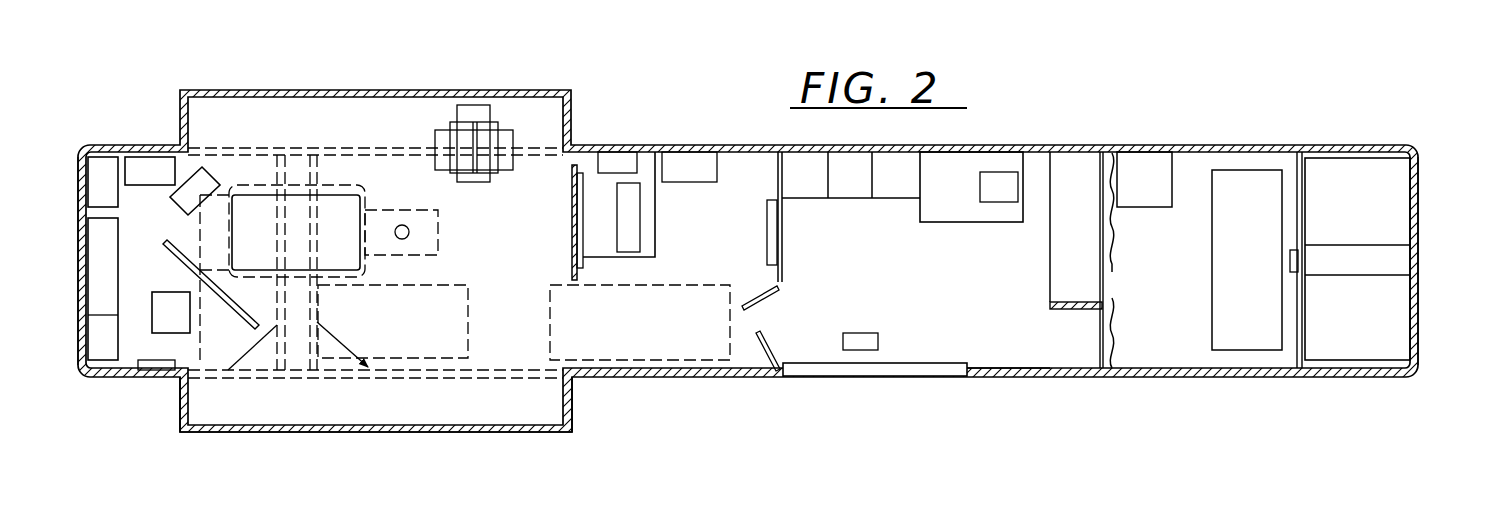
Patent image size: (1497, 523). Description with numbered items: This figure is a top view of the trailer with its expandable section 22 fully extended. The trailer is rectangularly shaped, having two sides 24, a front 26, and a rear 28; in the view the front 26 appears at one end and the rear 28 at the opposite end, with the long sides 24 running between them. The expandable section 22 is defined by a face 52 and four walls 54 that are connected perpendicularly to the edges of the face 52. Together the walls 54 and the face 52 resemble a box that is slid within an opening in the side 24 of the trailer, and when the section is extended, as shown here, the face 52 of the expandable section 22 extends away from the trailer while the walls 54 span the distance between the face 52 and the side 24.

The expandable section 22 is at (1237, 129).
The side 24 is at (1023, 378).
The front 26 is at (1420, 177).
The rear 28 is at (77, 166).
The face 52 is at (507, 433).
The walls 54 is at (180, 410).